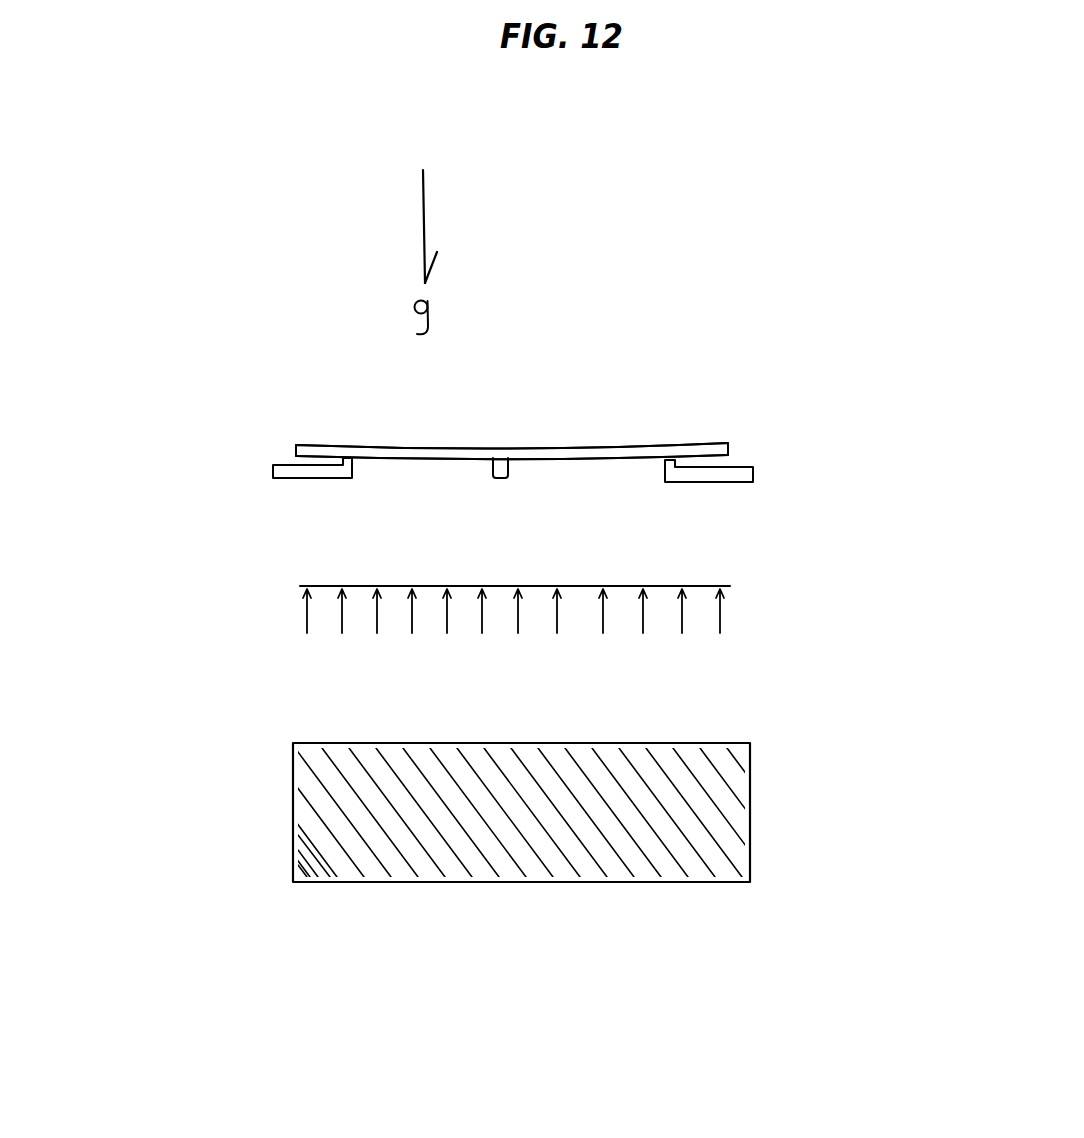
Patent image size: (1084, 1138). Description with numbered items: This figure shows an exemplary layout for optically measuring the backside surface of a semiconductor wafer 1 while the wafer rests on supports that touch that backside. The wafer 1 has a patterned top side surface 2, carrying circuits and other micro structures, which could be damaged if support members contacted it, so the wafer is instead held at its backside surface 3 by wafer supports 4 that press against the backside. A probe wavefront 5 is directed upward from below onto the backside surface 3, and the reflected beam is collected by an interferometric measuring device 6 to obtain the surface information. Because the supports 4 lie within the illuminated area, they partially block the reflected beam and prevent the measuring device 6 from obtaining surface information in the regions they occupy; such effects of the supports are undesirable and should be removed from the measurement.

The semiconductor wafer 1 is at (335, 430).
The top side surface of semiconductor wafer 2 is at (688, 433).
The backside surface of semiconductor wafer 3 is at (607, 464).
The supports for semiconductor wafer during measurement 4 is at (295, 490).
The probe wavefront 5 is at (743, 630).
The interferometric measuring device 6 is at (768, 988).